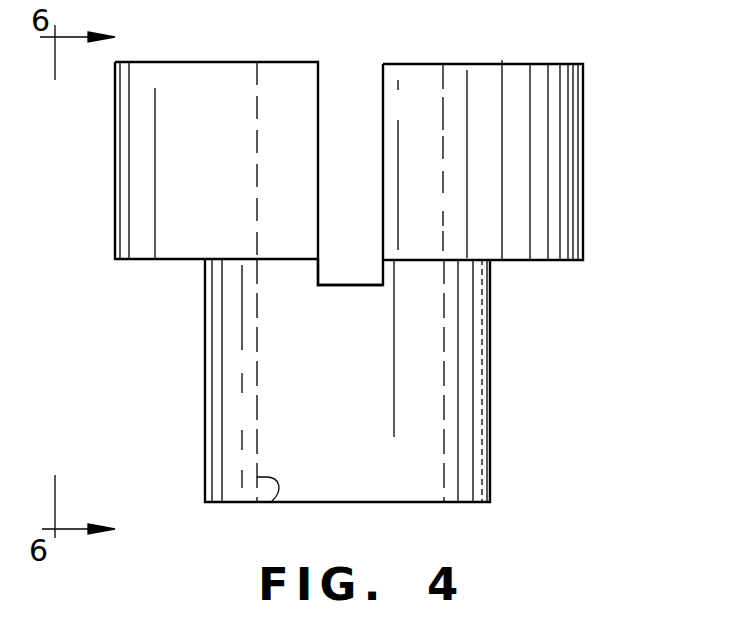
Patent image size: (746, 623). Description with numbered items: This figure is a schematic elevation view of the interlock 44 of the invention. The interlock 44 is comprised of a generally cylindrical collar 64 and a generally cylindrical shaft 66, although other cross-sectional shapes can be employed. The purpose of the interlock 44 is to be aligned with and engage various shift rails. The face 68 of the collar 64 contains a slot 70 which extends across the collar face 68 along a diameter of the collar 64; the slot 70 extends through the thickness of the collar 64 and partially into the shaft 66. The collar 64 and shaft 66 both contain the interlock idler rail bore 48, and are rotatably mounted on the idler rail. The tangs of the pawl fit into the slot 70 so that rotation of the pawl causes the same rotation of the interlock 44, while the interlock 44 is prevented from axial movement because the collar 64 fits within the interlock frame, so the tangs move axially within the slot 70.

The interlock 44 is at (380, 294).
The interlock idler rail bore 48 is at (272, 504).
The collar 64 is at (543, 135).
The shaft 66 is at (490, 353).
The face 68 is at (530, 65).
The slot 70 is at (376, 88).